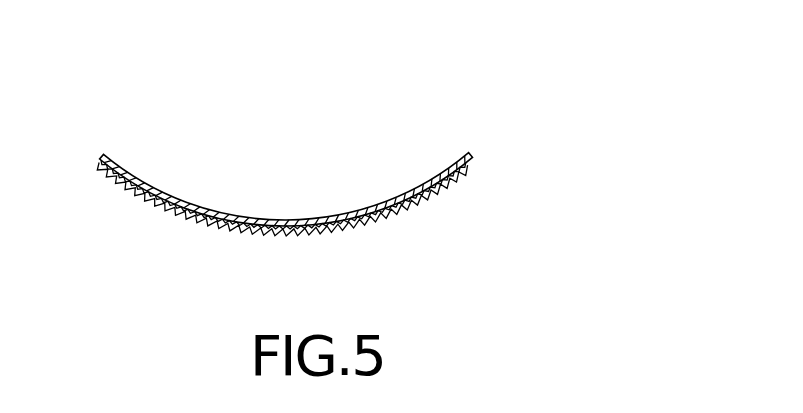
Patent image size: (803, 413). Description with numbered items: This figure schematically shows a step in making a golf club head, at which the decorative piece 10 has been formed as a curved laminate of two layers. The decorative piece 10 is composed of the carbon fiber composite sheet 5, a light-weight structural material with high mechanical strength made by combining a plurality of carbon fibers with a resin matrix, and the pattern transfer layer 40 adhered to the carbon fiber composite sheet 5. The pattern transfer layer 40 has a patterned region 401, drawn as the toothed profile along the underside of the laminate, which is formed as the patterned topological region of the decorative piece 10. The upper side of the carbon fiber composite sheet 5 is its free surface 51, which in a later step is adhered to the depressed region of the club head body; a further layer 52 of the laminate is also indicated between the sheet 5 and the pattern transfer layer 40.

The decorative piece 10 is at (330, 179).
The carbon fiber composite sheet 5 is at (288, 165).
The free surface 51 is at (352, 218).
The intermediate layer 52 is at (410, 207).
The pattern transfer layer 40 is at (238, 234).
The patterned region 401 is at (178, 214).